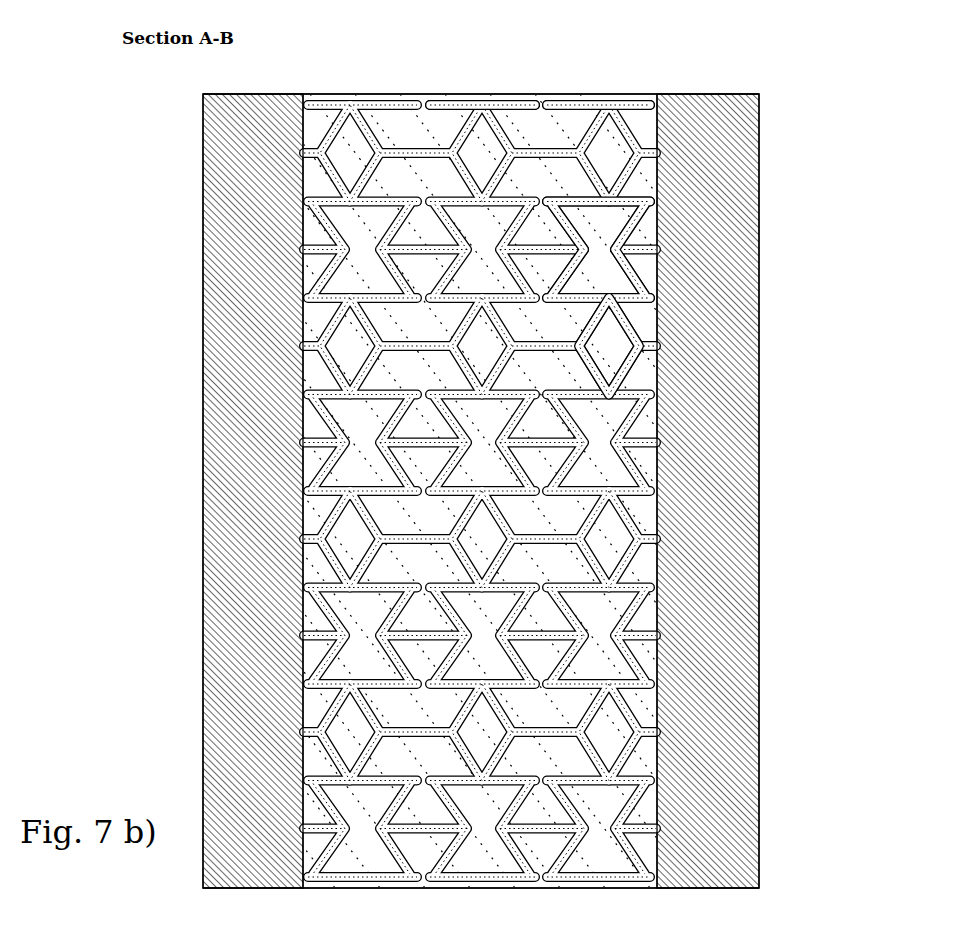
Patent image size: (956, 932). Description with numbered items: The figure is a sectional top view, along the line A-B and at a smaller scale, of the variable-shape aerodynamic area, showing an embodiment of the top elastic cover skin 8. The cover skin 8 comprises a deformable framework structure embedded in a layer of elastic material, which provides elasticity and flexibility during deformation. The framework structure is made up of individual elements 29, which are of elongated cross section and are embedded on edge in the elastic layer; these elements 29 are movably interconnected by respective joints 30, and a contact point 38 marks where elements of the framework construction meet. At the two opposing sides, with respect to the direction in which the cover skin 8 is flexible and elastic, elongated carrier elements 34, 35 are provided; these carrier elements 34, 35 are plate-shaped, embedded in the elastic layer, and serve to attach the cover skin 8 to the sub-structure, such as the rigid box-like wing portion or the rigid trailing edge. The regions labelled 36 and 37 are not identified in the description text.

The top elastic cover skin 8 is at (837, 447).
The elements 29 is at (630, 310).
The joints 30 is at (588, 352).
The carrier plate element of the framework structure 34 is at (232, 225).
The carrier plate element of the framework structure 35 is at (730, 203).
The interstitial space 36 is at (548, 108).
The transverse strut 37 is at (630, 98).
The contact point between the elements of the framework construction 38 is at (480, 93).